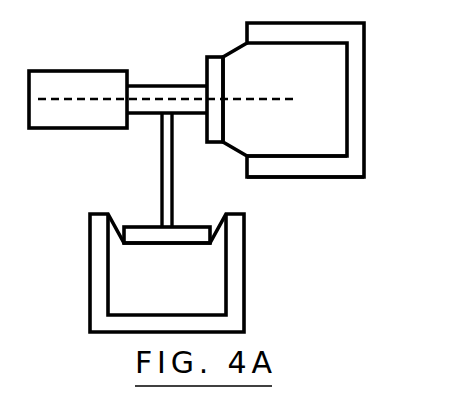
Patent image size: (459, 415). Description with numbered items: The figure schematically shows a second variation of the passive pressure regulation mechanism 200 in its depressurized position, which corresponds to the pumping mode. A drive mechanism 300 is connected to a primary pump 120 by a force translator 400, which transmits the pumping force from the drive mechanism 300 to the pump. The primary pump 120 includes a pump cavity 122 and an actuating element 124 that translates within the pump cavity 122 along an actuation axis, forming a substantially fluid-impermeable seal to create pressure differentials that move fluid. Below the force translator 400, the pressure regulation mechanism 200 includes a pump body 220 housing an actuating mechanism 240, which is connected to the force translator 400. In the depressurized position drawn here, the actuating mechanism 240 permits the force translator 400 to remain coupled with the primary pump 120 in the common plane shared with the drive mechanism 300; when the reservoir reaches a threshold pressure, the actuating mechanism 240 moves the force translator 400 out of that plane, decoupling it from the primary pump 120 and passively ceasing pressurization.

The primary pump 120 is at (376, 92).
The pump cavity 122 is at (298, 167).
The actuating element 124 is at (209, 72).
The pressure regulation mechanism 200 is at (58, 270).
The pump body 220 is at (237, 284).
The actuating mechanism 240 is at (138, 229).
The drive mechanism 300 is at (87, 75).
The force translator 400 is at (155, 88).